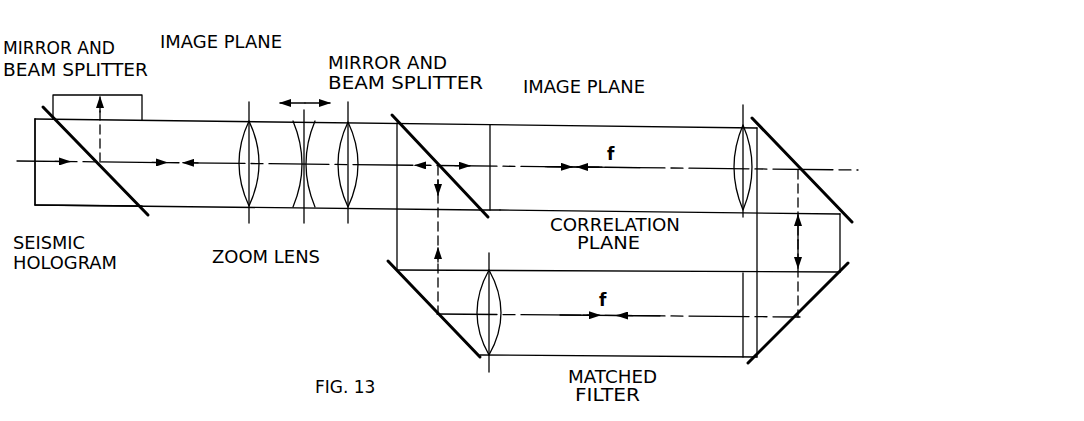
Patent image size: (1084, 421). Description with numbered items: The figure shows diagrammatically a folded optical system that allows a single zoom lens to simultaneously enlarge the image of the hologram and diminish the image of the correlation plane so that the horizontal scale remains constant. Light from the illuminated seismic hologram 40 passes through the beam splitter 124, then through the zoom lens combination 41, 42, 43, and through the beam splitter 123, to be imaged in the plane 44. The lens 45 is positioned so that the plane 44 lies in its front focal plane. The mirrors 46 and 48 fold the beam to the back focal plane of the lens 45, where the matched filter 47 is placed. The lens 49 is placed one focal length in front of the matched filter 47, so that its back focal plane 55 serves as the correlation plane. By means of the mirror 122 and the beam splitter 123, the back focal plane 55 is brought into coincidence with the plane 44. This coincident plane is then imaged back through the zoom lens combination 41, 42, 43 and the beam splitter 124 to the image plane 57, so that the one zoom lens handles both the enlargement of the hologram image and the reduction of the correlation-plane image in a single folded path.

The seismic hologram 40 is at (35, 195).
The zoom lens combination element 41 is at (245, 214).
The zoom lens combination element 42 is at (303, 213).
The zoom lens combination element 43 is at (352, 213).
The plane 44 is at (493, 140).
The lens 45 is at (735, 148).
The mirror 46 is at (768, 130).
The matched filter 47 is at (740, 347).
The mirror 48 is at (790, 327).
The lens 49 is at (478, 330).
The back focal plane 55 is at (494, 201).
The image plane 57 is at (143, 95).
The mirror 122 is at (405, 282).
The beam splitter 123 is at (396, 114).
The beam splitter 124 is at (48, 105).